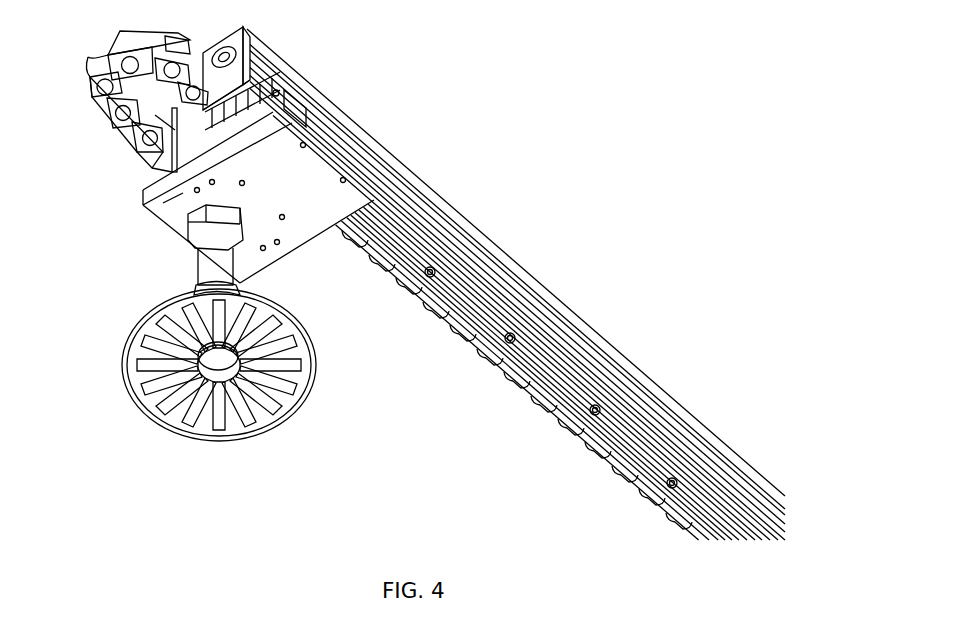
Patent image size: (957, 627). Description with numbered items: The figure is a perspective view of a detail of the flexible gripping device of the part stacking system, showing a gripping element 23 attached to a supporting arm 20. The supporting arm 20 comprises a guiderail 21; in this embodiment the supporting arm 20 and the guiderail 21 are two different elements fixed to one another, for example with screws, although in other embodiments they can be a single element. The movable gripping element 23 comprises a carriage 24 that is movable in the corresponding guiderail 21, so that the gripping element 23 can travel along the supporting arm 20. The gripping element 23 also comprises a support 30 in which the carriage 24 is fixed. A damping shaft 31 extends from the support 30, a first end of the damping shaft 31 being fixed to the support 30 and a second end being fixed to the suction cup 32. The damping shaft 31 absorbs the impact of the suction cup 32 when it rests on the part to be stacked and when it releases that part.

The supporting arm 20 is at (497, 247).
The guiderail 21 is at (448, 328).
The gripping element 23 is at (118, 291).
The carriage 24 is at (337, 137).
The support 30 is at (183, 193).
The damping shaft 31 is at (213, 268).
The suction cup 32 is at (135, 367).